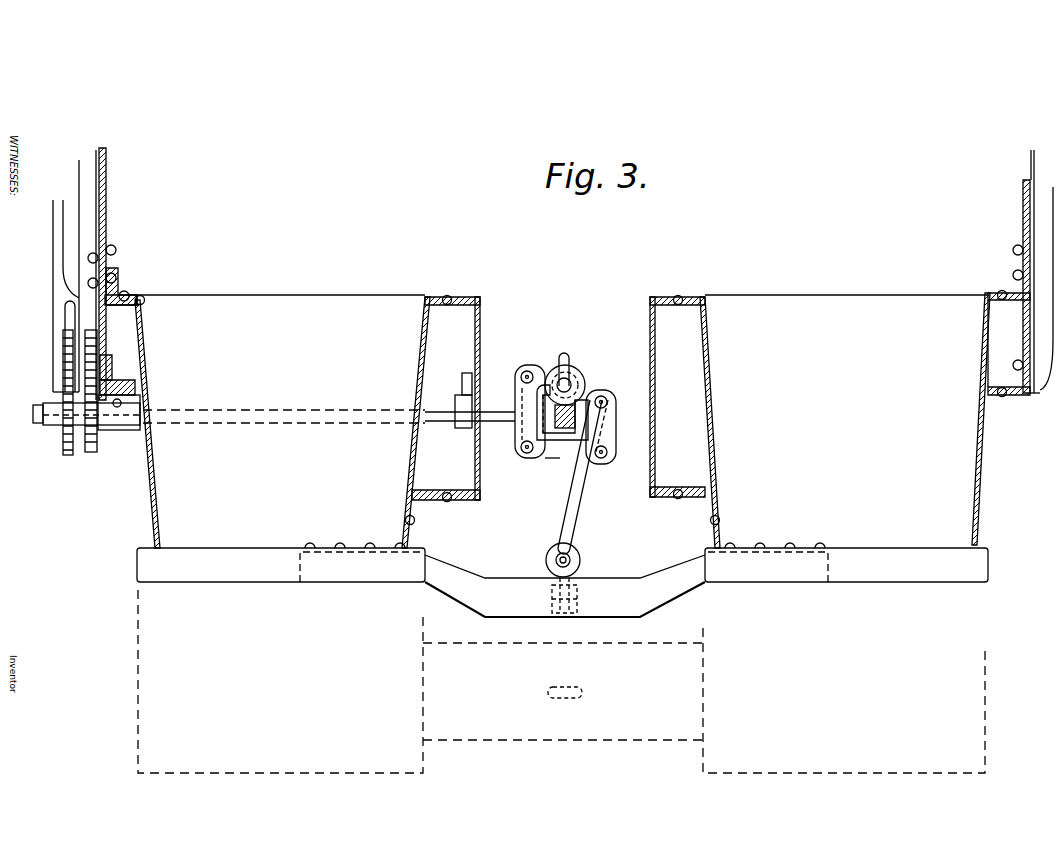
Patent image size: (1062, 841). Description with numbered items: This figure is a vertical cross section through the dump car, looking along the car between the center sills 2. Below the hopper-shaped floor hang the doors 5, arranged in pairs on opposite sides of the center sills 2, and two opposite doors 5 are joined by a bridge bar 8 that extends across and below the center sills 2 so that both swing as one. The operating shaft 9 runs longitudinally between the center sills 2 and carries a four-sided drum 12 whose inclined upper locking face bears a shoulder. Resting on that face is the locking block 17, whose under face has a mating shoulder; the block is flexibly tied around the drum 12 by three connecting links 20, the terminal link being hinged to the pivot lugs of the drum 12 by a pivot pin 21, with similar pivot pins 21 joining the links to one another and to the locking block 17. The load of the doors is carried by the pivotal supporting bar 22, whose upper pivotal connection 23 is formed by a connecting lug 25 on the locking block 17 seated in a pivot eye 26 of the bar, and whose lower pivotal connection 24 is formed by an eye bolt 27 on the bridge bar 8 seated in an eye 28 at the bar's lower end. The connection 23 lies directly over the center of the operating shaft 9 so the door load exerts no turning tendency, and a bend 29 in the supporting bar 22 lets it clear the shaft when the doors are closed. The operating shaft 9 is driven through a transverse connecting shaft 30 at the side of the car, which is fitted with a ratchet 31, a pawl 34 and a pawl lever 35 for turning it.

The center sills 2 is at (475, 452).
The doors 5 is at (562, 658).
The bridge bar 8 is at (565, 586).
The operating shaft 9 is at (561, 430).
The drum 12 is at (569, 437).
The locking block 17 is at (551, 366).
The connecting links 20 is at (612, 428).
The pivot pins 21 is at (525, 372).
The pivotal supporting bar 22 is at (583, 496).
The pivotal connection 23 is at (572, 380).
The pivotal connection 24 is at (571, 558).
The connecting lug 25 is at (566, 356).
The pivot eye 26 is at (583, 390).
The eye bolt 27 is at (546, 560).
The eye 28 is at (575, 546).
The bend 29 is at (583, 408).
The connecting shaft 30 is at (440, 410).
The ratchet 31 is at (70, 453).
The pawl 34 is at (68, 370).
The pawl lever 35 is at (57, 284).